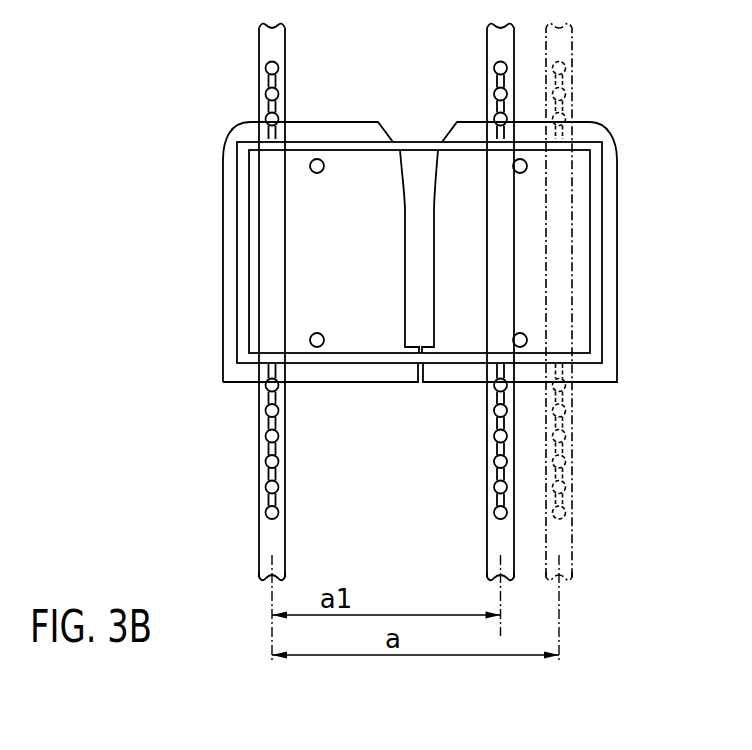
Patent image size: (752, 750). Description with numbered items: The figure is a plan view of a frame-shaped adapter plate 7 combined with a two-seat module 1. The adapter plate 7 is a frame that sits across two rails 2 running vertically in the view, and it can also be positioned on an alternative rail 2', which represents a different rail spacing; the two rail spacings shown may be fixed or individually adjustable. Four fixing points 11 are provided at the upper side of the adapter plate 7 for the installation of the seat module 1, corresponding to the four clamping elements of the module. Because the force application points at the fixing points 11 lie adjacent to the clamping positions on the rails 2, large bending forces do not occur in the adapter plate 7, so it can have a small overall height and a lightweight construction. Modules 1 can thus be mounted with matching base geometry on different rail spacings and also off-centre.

The seat module 1 is at (605, 110).
The rail 2 is at (355, 302).
The rail 2' is at (599, 302).
The adapter plate 7 is at (414, 148).
The fixing point 11 is at (317, 159).